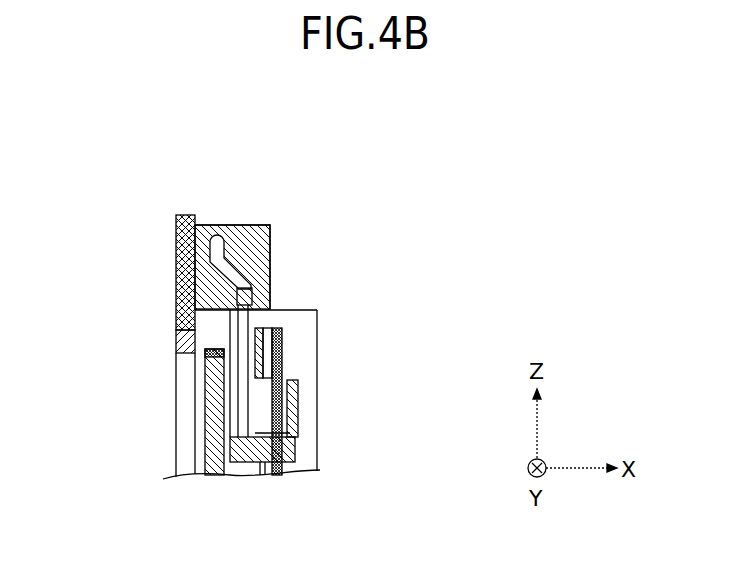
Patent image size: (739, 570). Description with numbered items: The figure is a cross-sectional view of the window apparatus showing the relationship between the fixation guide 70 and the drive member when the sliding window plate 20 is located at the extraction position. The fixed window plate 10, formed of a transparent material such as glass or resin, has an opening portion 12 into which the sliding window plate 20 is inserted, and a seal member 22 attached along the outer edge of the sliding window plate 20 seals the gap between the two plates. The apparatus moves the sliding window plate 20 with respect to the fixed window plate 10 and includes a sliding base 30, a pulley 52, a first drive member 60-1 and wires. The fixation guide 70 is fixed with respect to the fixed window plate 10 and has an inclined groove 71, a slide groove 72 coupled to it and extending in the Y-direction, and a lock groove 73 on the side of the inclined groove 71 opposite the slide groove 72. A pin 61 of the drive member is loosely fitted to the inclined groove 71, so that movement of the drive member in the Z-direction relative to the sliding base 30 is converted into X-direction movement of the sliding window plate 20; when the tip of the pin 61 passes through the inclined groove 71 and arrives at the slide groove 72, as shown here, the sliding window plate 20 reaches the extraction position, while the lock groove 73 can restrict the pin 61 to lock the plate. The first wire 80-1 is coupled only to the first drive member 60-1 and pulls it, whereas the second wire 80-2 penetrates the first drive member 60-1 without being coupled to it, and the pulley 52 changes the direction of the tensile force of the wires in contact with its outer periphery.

The fixed window plate 10 is at (176, 266).
The opening portion 12 is at (178, 398).
The sliding window plate 20 is at (205, 438).
The seal member 22 is at (205, 352).
The sliding base 30 is at (243, 478).
The pulley 52 is at (285, 350).
The pin 61 is at (178, 331).
The fixation guide 70 is at (257, 226).
The inclined groove 71 is at (270, 262).
The slide groove 72 is at (266, 306).
The lock groove 73 is at (270, 245).
The second wire 80-2 is at (283, 398).
The first wire 80-1 is at (298, 430).
The first drive member 60-1 is at (296, 458).